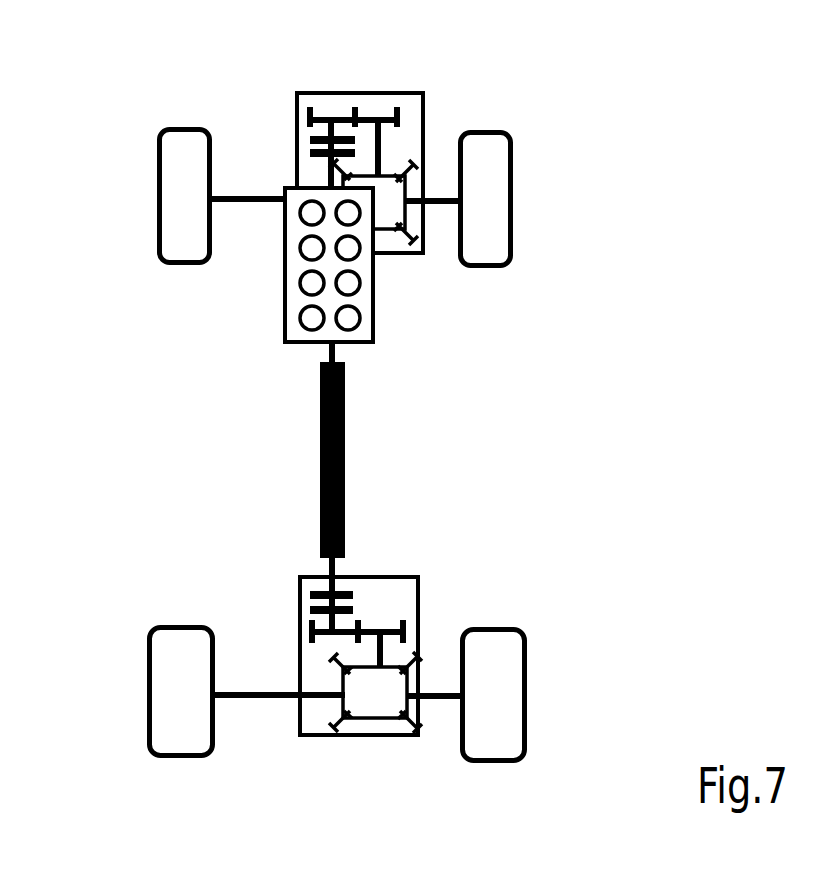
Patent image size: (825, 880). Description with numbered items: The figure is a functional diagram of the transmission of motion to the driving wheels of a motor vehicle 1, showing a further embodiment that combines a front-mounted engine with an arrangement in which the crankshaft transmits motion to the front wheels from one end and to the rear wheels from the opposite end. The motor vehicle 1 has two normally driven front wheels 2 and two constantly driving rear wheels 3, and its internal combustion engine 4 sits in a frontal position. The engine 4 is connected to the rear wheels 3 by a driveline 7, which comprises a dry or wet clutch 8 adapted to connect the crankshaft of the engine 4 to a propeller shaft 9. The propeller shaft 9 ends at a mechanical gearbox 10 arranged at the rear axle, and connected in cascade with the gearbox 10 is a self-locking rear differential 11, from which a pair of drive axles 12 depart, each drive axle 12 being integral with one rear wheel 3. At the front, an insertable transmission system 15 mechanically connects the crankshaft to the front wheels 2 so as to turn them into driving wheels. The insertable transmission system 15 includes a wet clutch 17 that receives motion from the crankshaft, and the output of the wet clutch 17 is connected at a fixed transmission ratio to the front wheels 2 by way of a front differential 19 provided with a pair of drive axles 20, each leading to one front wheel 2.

The motor vehicle 1 is at (126, 131).
The front wheels 2 is at (180, 143).
The rear wheels 3 is at (493, 642).
The internal combustion engine 4 is at (372, 307).
The driveline 7 is at (184, 432).
The clutch 8 is at (318, 594).
The propeller shaft 9 is at (346, 465).
The mechanical gearbox 10 is at (343, 656).
The self-locking rear differential 11 is at (373, 700).
The drive axles 12 is at (253, 699).
The insertable transmission system 15 is at (357, 128).
The wet clutch 17 is at (322, 139).
The front differential 19 is at (390, 184).
The drive axles 20 is at (242, 203).